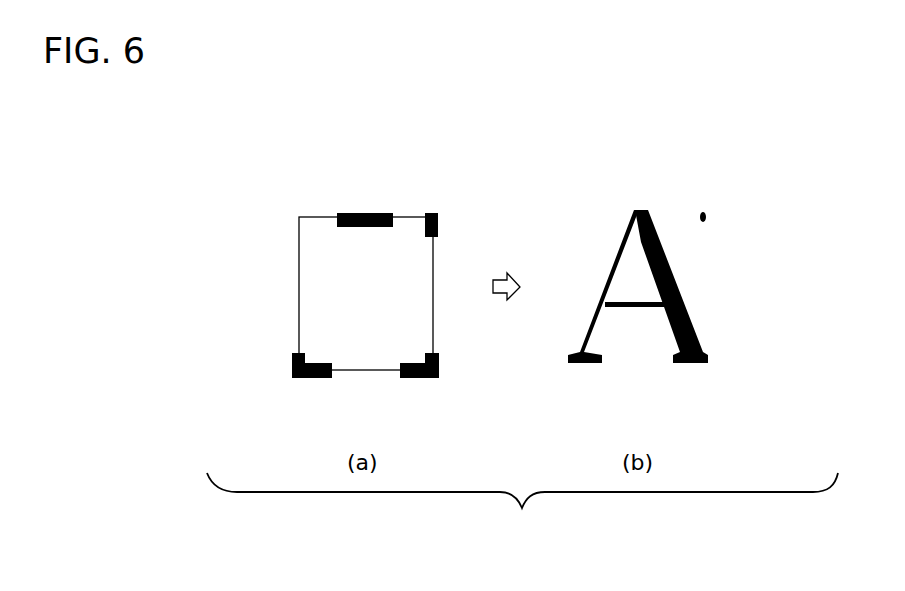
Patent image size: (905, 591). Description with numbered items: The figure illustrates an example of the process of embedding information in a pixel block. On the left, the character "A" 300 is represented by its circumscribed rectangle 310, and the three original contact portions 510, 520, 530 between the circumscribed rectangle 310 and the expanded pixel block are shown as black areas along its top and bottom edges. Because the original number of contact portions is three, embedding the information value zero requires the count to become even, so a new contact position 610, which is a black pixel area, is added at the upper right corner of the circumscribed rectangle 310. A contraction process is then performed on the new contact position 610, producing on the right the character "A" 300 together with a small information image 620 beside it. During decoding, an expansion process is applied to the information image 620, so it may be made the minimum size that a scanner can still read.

The circumscribed rectangle 310 is at (433, 267).
The contact portion 510 is at (373, 214).
The new contact position 610 is at (432, 226).
The contact portion 520 is at (308, 380).
The contact portion 530 is at (427, 380).
The character "A" 300 is at (692, 320).
The information image 620 is at (706, 216).